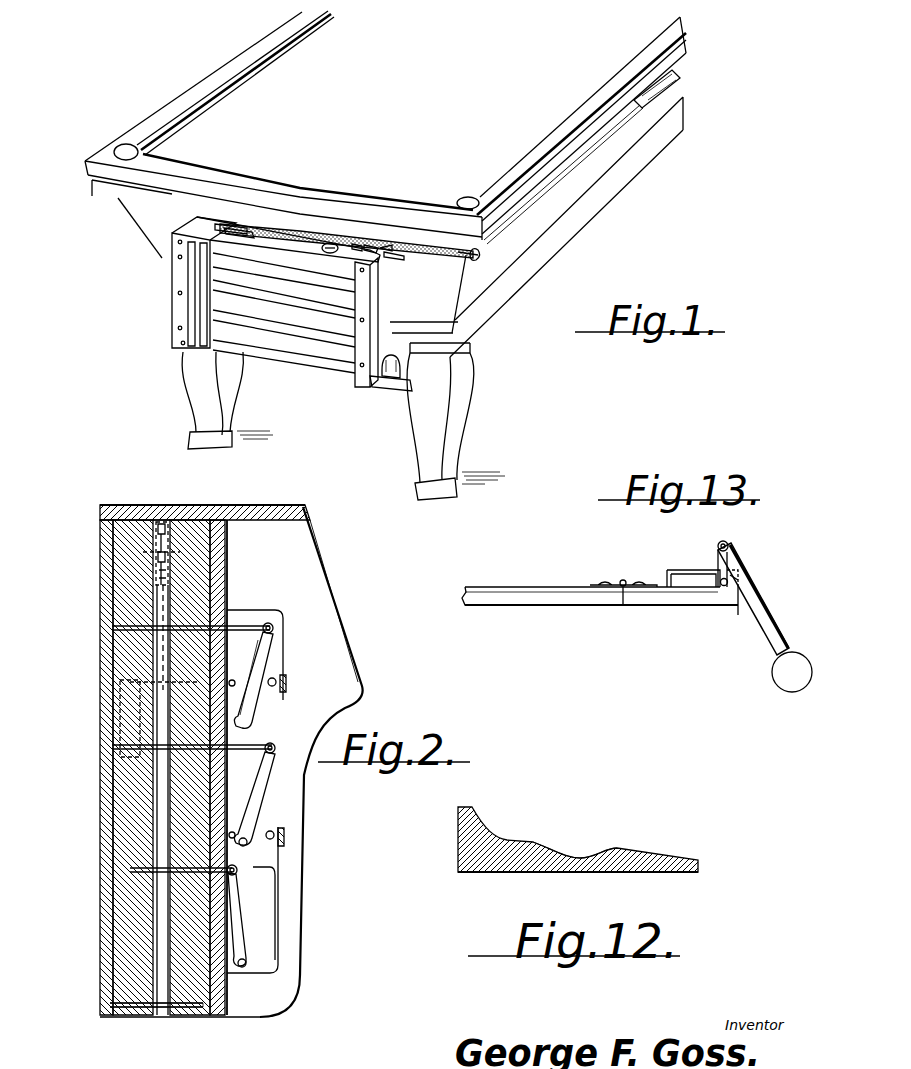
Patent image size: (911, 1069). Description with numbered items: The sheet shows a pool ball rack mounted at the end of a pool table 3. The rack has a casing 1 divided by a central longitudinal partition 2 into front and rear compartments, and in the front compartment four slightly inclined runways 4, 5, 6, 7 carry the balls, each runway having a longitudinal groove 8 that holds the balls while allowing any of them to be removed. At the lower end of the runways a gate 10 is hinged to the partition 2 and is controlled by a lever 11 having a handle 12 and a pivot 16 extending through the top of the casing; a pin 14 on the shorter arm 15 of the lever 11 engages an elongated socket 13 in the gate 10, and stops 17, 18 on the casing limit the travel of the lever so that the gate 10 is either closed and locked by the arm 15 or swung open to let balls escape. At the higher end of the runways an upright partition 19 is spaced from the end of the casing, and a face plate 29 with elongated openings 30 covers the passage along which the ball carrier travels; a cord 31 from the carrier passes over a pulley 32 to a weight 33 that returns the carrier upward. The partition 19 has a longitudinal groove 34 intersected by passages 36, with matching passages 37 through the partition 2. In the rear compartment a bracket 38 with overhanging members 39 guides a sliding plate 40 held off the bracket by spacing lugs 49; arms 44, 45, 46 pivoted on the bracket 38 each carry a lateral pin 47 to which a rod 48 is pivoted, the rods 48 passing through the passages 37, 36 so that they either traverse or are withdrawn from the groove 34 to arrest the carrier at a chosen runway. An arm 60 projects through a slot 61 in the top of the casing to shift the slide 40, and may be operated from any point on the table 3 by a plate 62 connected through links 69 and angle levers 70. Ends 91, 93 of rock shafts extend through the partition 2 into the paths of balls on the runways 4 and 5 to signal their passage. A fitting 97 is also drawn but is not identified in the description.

In FIG. 1, the casing 1 is at (280, 247).
In FIG. 2, the casing 1 is at (270, 508).
In FIG. 2, the central longitudinal partition 2 is at (227, 537).
In FIG. 13, the central longitudinal partition 2 is at (600, 603).
In FIG. 1, the pool table 3 is at (500, 282).
In FIG. 1, the runway 4 is at (395, 290).
In FIG. 12, the runway 4 is at (700, 862).
In FIG. 1, the runway 5 is at (300, 300).
In FIG. 1, the runway 6 is at (302, 335).
In FIG. 1, the runway 7 is at (333, 367).
In FIG. 12, the longitudinal groove 8 is at (588, 856).
In FIG. 1, the gate 10 is at (383, 382).
In FIG. 13, the gate 10 is at (713, 602).
In FIG. 1, the lever 11 is at (370, 247).
In FIG. 13, the lever 11 is at (766, 618).
In FIG. 1, the handle 12 is at (388, 248).
In FIG. 13, the handle 12 is at (786, 683).
In FIG. 13, the elongated socket 13 is at (687, 573).
In FIG. 13, the pin 14 is at (733, 592).
In FIG. 13, the shorter arm 15 is at (727, 566).
In FIG. 13, the pivot 16 is at (728, 542).
In FIG. 1, the stop 17 is at (392, 257).
In FIG. 1, the stop 18 is at (356, 246).
In FIG. 2, the upright partition 19 is at (130, 650).
In FIG. 1, the face plate 29 is at (176, 330).
In FIG. 2, the face plate 29 is at (100, 850).
In FIG. 1, the elongated openings 30 is at (183, 350).
In FIG. 2, the cord 31 is at (165, 520).
In FIG. 2, the pulley 32 is at (163, 550).
In FIG. 2, the weight 33 is at (135, 735).
In FIG. 2, the longitudinal groove 34 is at (130, 728).
In FIG. 2, the passages 36 is at (118, 630).
In FIG. 2, the matching passages 37 is at (227, 610).
In FIG. 2, the bracket 38 is at (273, 850).
In FIG. 2, the overhanging members 39 is at (288, 683).
In FIG. 2, the sliding plate 40 is at (263, 673).
In FIG. 2, the arm 44 is at (257, 713).
In FIG. 2, the arm 45 is at (267, 785).
In FIG. 2, the arm 46 is at (243, 950).
In FIG. 2, the lateral pin 47 is at (273, 628).
In FIG. 2, the rod 48 is at (263, 630).
In FIG. 2, the spacing lugs 49 is at (140, 688).
In FIG. 1, the arm 60 is at (228, 228).
In FIG. 1, the slot 61 is at (218, 226).
In FIG. 1, the plate 62 is at (652, 104).
In FIG. 1, the links 69 is at (563, 176).
In FIG. 1, the angle levers 70 is at (480, 254).
In FIG. 1, the end of rock shaft 91 is at (210, 273).
In FIG. 1, the end of rock shaft 93 is at (253, 292).
In FIG. 1, the fitting 97 is at (336, 243).